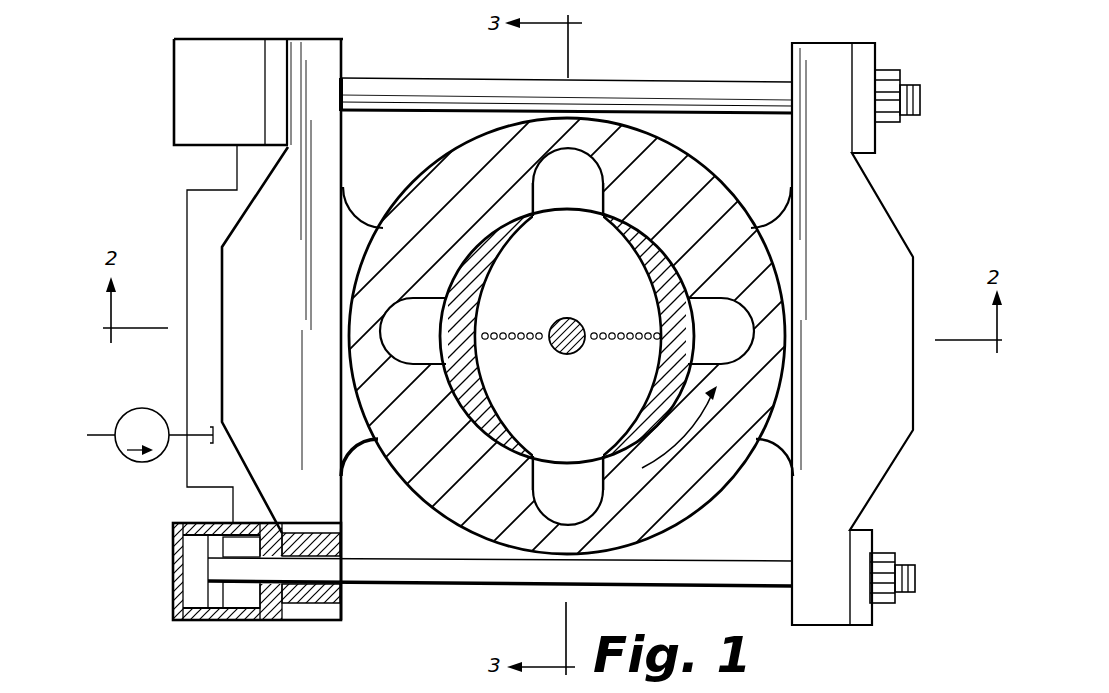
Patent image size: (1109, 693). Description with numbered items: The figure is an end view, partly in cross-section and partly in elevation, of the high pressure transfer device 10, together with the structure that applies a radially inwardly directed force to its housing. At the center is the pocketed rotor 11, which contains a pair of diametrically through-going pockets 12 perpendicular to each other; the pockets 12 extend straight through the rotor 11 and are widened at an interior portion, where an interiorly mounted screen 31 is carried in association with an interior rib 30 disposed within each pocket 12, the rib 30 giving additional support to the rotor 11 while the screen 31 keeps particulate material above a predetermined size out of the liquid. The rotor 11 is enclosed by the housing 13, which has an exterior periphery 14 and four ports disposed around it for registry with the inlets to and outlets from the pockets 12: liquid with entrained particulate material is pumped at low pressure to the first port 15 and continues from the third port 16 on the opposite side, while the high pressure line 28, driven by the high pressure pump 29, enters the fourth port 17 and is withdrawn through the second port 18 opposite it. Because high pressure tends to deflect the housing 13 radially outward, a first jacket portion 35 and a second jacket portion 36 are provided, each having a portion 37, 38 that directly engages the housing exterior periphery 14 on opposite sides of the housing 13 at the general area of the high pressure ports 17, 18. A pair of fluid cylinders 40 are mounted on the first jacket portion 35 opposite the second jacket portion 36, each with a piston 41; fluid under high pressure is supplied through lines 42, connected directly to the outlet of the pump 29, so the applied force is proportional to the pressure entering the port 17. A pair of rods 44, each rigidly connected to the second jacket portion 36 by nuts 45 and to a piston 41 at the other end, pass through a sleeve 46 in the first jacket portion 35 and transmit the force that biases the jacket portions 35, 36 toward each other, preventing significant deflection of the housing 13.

The high pressure transfer device 10 is at (884, 638).
The pocketed rotor 11 is at (653, 244).
The diametrically through-going pockets 12 is at (637, 413).
The housing 13 is at (670, 505).
The housing exterior periphery 14 is at (725, 183).
The first port 15 is at (575, 508).
The third port 16 is at (573, 150).
The fourth port 17 is at (412, 296).
The second port 18 is at (710, 297).
The high pressure line 28 is at (195, 435).
The high pressure pump 29 is at (148, 456).
The interior rib 30 is at (565, 322).
The screen 31 is at (534, 346).
The first jacket portion 35 is at (317, 169).
The second jacket portion 36 is at (862, 207).
The engaging portion of first jacket portion 37 is at (363, 472).
The engaging portion of second jacket portion 38 is at (765, 453).
The fluid cylinder 40 is at (200, 42).
The piston 41 is at (191, 621).
The line 42 is at (212, 198).
The rod 44 is at (692, 88).
The nut 45 is at (888, 70).
The sleeve 46 is at (340, 590).